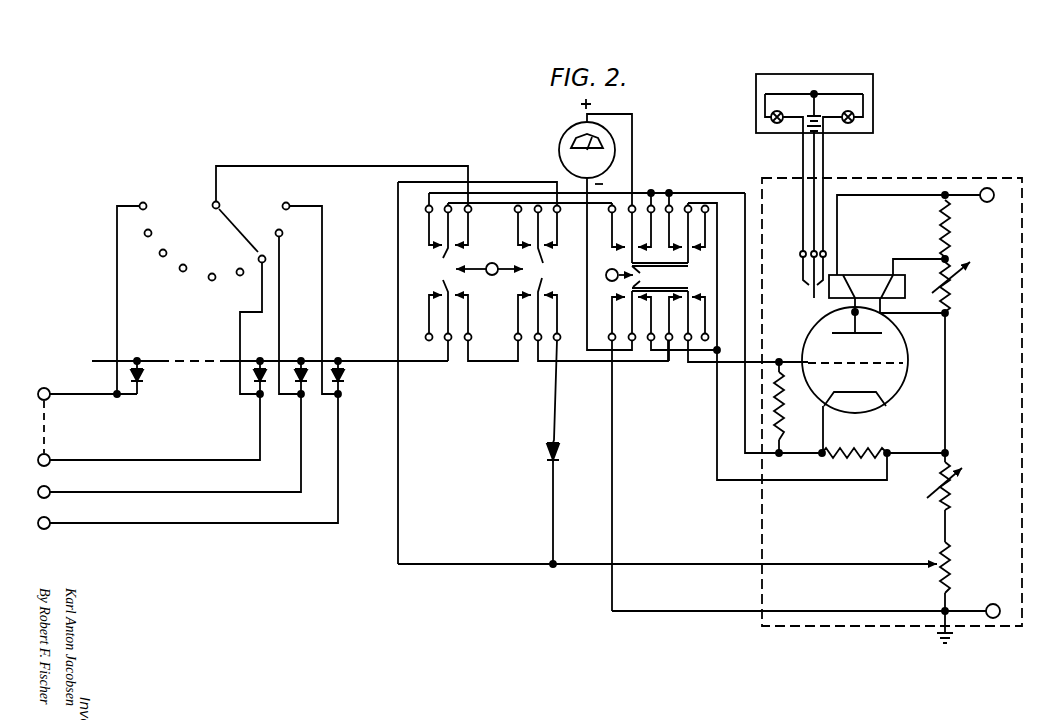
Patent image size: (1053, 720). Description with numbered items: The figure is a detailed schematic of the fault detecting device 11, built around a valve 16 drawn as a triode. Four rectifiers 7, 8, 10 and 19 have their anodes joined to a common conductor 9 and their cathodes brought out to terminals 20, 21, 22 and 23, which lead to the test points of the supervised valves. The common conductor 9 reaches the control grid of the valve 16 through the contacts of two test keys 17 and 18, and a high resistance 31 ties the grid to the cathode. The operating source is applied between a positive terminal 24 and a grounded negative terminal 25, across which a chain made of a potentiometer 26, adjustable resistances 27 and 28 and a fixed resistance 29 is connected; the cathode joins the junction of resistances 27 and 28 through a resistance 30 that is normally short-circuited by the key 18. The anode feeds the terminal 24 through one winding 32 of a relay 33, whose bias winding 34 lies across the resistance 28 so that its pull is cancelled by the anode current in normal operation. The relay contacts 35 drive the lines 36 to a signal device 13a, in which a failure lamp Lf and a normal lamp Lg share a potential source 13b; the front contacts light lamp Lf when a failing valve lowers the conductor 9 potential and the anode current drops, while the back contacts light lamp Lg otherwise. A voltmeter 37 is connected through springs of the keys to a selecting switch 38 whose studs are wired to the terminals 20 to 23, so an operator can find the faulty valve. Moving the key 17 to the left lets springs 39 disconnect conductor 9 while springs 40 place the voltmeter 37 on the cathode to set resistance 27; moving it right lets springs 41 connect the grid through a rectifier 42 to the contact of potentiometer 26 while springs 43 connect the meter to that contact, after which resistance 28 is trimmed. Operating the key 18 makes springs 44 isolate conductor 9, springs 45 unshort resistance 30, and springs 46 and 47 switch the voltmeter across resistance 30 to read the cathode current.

The rectifier 7 is at (344, 381).
The rectifier 8 is at (305, 381).
The common conductor 9 is at (358, 361).
The rectifier 10 is at (267, 384).
The fault detecting device 11 is at (861, 534).
The signal device 13a is at (874, 94).
The potential source 13b is at (820, 112).
The valve 16 is at (900, 342).
The key 17 is at (500, 292).
The key 18 is at (673, 287).
The rectifier 19 is at (142, 377).
The terminal 20 is at (185, 461).
The terminal 21 is at (168, 446).
The terminal 22 is at (149, 430).
The terminal 23 is at (84, 411).
The positive terminal 24 is at (959, 180).
The negative terminal 25 is at (993, 618).
The potentiometer 26 is at (937, 563).
The adjustable resistance 27 is at (953, 502).
The adjustable resistance 28 is at (930, 360).
The fixed resistance 29 is at (937, 237).
The resistance 30 is at (863, 441).
The high resistance 31 is at (792, 407).
The winding 32 is at (847, 280).
The relay 33 is at (875, 275).
The bias winding 34 is at (905, 278).
The contacts 35 is at (806, 276).
The lines 36 is at (806, 146).
The voltmeter 37 is at (587, 224).
The selecting switch 38 is at (292, 280).
The springs 39 is at (455, 316).
The springs 40 is at (455, 229).
The springs 41 is at (523, 329).
The rectifier 42 is at (533, 453).
The springs 43 is at (530, 229).
The springs 44 is at (682, 312).
The springs 45 is at (682, 233).
The springs 46 is at (633, 308).
The springs 47 is at (635, 231).
The signal lamp Lg is at (772, 123).
The signal lamp Lf is at (856, 121).